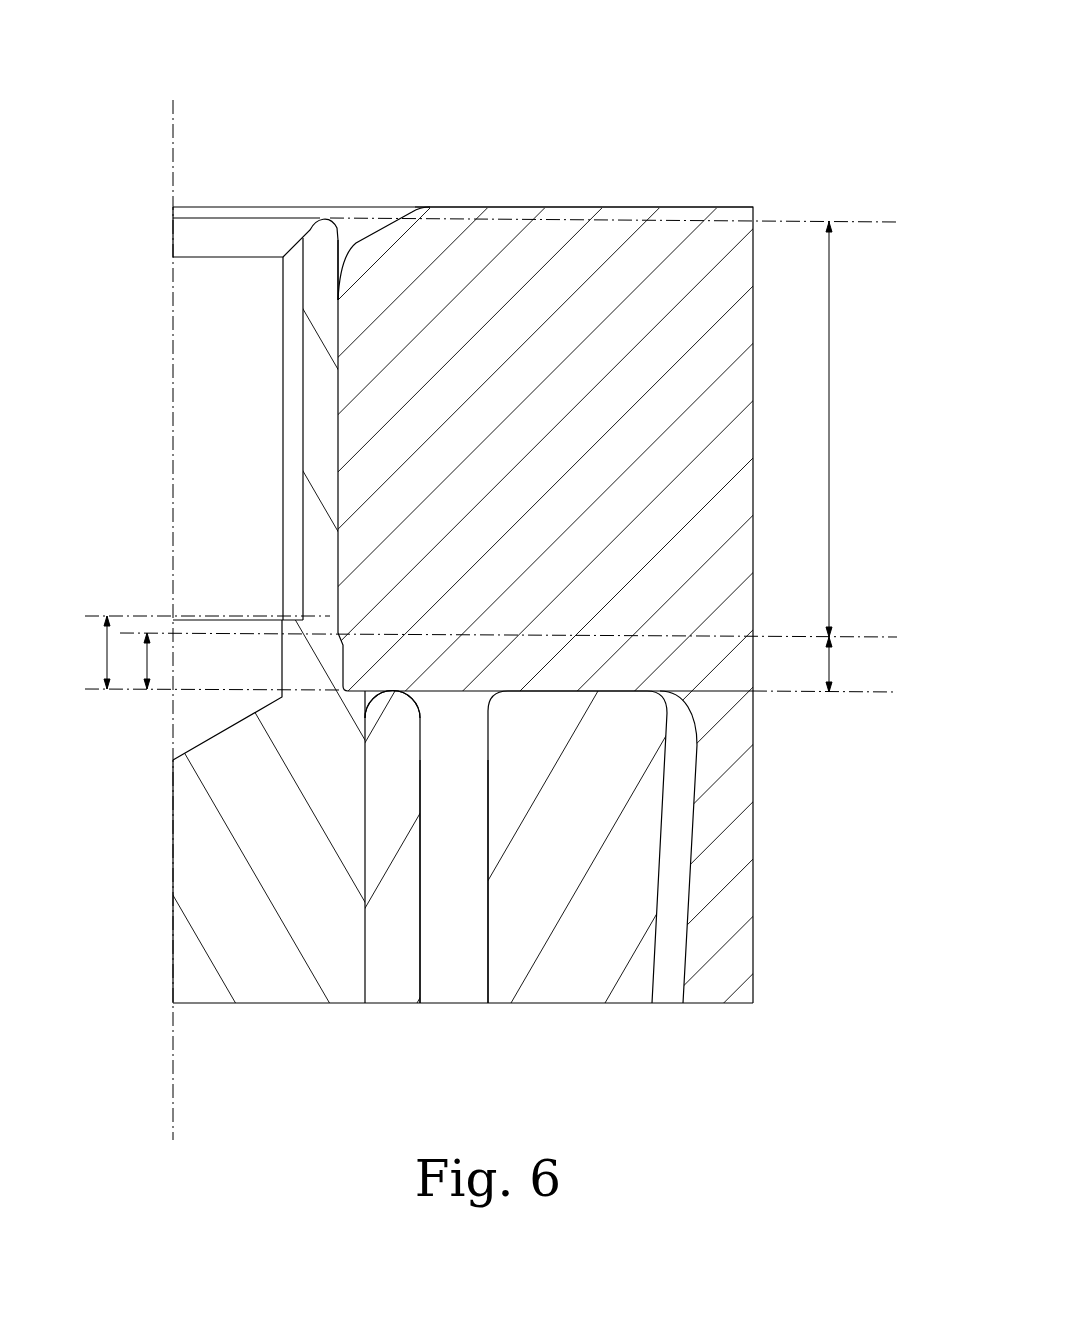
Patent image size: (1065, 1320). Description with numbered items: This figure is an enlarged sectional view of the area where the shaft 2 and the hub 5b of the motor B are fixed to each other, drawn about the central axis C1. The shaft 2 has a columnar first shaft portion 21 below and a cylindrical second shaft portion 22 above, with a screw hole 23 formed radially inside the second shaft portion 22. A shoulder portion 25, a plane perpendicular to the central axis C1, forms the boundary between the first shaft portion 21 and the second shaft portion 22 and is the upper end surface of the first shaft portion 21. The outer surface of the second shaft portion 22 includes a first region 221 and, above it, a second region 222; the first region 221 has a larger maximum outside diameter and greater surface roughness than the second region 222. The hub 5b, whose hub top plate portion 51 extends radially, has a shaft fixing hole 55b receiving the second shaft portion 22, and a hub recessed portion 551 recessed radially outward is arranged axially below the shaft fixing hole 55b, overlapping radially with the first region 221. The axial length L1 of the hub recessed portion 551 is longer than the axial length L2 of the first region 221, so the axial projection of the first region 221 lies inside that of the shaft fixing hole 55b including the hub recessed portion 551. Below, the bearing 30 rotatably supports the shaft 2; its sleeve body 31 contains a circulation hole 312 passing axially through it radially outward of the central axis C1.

The shaft 2 is at (175, 933).
The first shaft portion 21 is at (207, 862).
The second shaft portion 22 is at (313, 265).
The screw hole 23 is at (198, 302).
The shoulder portion 25 is at (355, 687).
The bearing 30 is at (620, 995).
The sleeve body 31 is at (553, 988).
The circulation hole 312 is at (455, 985).
The hub top plate portion 51 is at (463, 207).
The hub 5b is at (677, 207).
The shaft fixing hole 55b is at (337, 452).
The hub recessed portion 551 is at (343, 634).
The first region 221 is at (857, 664).
The second region 222 is at (859, 429).
The axial length of the hub recessed portion L1 is at (97, 652).
The axial length of the first region L2 is at (136, 661).
The central axis C1 is at (175, 128).
The motor B is at (710, 104).